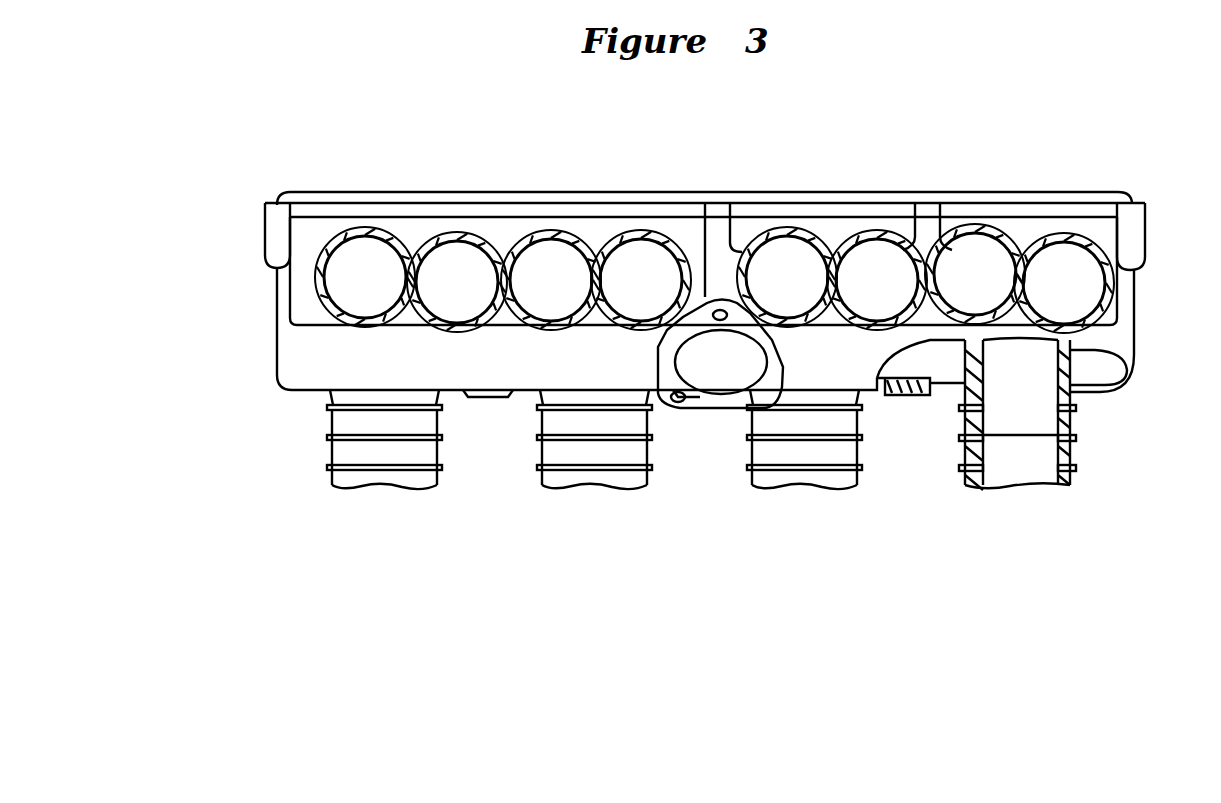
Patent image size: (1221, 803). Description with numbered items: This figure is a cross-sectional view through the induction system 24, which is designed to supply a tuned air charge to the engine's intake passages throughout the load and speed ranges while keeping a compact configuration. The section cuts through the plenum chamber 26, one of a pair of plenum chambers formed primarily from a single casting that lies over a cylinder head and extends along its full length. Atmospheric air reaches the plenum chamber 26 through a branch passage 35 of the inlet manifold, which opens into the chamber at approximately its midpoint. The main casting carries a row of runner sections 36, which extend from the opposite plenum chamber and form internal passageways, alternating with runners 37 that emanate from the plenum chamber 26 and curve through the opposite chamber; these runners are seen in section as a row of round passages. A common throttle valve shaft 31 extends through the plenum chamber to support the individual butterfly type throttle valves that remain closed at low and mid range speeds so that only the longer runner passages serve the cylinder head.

The induction system 24 is at (243, 183).
The second plenum chamber 26 is at (1152, 296).
The throttle valve shaft 31 is at (338, 453).
The branch passage 35 is at (720, 375).
The runner sections 36 is at (455, 262).
The runners 37 is at (350, 262).